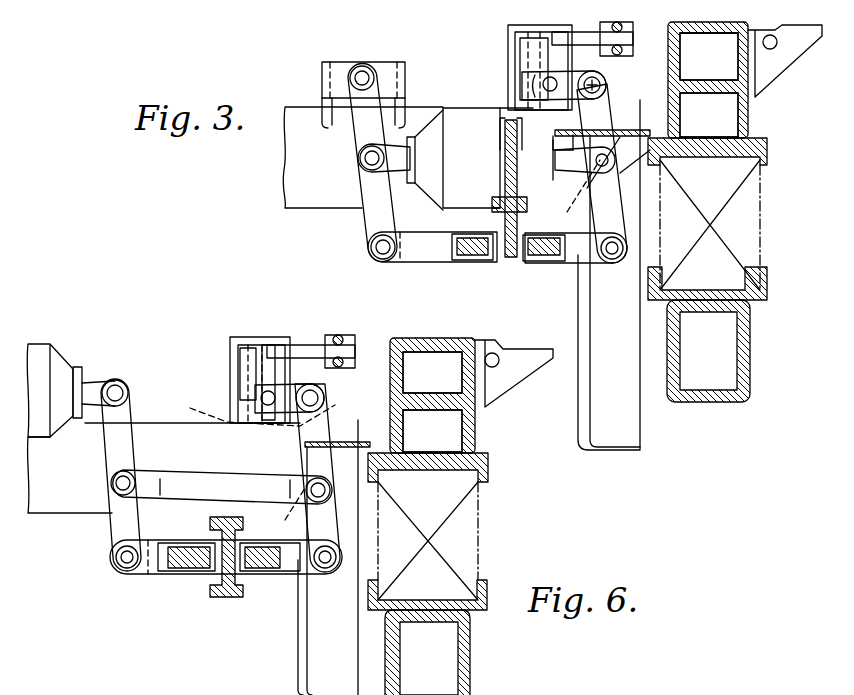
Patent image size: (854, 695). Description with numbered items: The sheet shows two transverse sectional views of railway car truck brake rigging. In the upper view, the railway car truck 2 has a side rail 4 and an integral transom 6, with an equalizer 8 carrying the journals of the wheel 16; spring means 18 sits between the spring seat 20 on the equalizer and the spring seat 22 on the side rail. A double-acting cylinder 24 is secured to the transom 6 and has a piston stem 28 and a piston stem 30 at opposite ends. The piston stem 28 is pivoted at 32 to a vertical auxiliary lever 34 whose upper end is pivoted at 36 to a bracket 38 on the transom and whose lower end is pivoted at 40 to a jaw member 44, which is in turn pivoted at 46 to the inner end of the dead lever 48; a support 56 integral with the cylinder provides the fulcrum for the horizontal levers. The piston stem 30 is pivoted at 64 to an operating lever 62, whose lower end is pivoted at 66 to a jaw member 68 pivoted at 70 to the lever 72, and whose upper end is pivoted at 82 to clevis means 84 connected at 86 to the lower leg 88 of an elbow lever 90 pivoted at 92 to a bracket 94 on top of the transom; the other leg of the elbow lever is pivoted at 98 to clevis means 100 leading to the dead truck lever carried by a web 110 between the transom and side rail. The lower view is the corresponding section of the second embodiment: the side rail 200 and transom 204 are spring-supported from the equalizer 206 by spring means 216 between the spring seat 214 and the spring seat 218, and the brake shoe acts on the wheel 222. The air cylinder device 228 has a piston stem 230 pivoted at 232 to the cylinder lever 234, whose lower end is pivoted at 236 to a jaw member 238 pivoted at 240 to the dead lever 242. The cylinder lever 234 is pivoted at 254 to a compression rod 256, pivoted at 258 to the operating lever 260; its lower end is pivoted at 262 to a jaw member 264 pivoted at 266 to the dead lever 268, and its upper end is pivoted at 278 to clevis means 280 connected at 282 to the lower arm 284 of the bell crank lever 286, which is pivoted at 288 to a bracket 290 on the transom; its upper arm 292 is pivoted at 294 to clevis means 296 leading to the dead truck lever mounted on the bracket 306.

In FIG. 3, the railway car truck 2 is at (764, 97).
In FIG. 3, the side rail 4 is at (725, 32).
In FIG. 3, the transom 6 is at (303, 118).
In FIG. 3, the equalizer 8 is at (751, 358).
In FIG. 3, the wheel 16 is at (642, 433).
In FIG. 3, the spring means 18 is at (712, 222).
In FIG. 3, the spring seat 20 is at (768, 280).
In FIG. 3, the spring seat 22 is at (768, 160).
In FIG. 3, the cylinder 24 is at (438, 108).
In FIG. 3, the piston stem 28 is at (400, 158).
In FIG. 3, the piston stem 30 is at (575, 162).
In FIG. 3, the pivot 32 is at (362, 160).
In FIG. 3, the auxiliary lever 34 is at (364, 210).
In FIG. 3, the pivot 36 is at (362, 70).
In FIG. 3, the bracket 38 is at (397, 68).
In FIG. 3, the pivot 40 is at (370, 251).
In FIG. 3, the jaw member 44 is at (410, 262).
In FIG. 3, the pivot 46 is at (472, 258).
In FIG. 3, the dead lever 48 is at (462, 238).
In FIG. 3, the support 56 is at (503, 160).
In FIG. 3, the operating lever 62 is at (640, 205).
In FIG. 3, the pivot 64 is at (612, 133).
In FIG. 3, the pivot 66 is at (613, 258).
In FIG. 3, the jaw member 68 is at (580, 263).
In FIG. 3, the pivot 70 is at (530, 262).
In FIG. 3, the lever 72 is at (550, 238).
In FIG. 3, the pivot 82 is at (660, 72).
In FIG. 3, the clevis means 84 is at (606, 88).
In FIG. 3, the pivot 86 is at (500, 120).
In FIG. 3, the lower leg 88 is at (508, 88).
In FIG. 3, the elbow lever 90 is at (528, 40).
In FIG. 3, the pivot 92 is at (670, 23).
In FIG. 3, the bracket 94 is at (552, 35).
In FIG. 3, the pivot 98 is at (675, 37).
In FIG. 3, the clevis means 100 is at (623, 28).
In FIG. 3, the web 110 is at (706, 99).
In FIG. 6, the side rail 200 is at (440, 338).
In FIG. 6, the transom 204 is at (164, 468).
In FIG. 6, the equalizer 206 is at (472, 671).
In FIG. 6, the spring seat 214 is at (488, 600).
In FIG. 6, the spring means 216 is at (430, 538).
In FIG. 6, the spring seat 218 is at (489, 476).
In FIG. 6, the wheel 222 is at (300, 677).
In FIG. 6, the air cylinder device 228 is at (58, 344).
In FIG. 6, the piston stem 230 is at (96, 382).
In FIG. 6, the pivot 232 is at (120, 388).
In FIG. 6, the cylinder lever 234 is at (105, 444).
In FIG. 6, the pivot 236 is at (116, 557).
In FIG. 6, the jaw member 238 is at (158, 574).
In FIG. 6, the pivot 240 is at (186, 572).
In FIG. 6, the dead lever 242 is at (180, 546).
In FIG. 6, the pivot 254 is at (110, 485).
In FIG. 6, the compression rod 256 is at (200, 490).
In FIG. 6, the pivot 258 is at (306, 486).
In FIG. 6, the operating lever 260 is at (358, 527).
In FIG. 6, the pivot 262 is at (325, 569).
In FIG. 6, the jaw member 264 is at (278, 574).
In FIG. 6, the pivot 266 is at (262, 546).
In FIG. 6, the dead lever 268 is at (235, 597).
In FIG. 6, the pivot 278 is at (358, 386).
In FIG. 6, the clevis means 280 is at (320, 345).
In FIG. 6, the pivot 282 is at (214, 420).
In FIG. 6, the lower arm 284 is at (230, 380).
In FIG. 6, the bell crank lever 286 is at (268, 345).
In FIG. 6, the pivot 288 is at (280, 385).
In FIG. 6, the bracket 290 is at (238, 345).
In FIG. 6, the upper arm 292 is at (316, 392).
In FIG. 6, the pivot 294 is at (344, 360).
In FIG. 6, the clevis means 296 is at (344, 338).
In FIG. 6, the bracket 306 is at (372, 445).